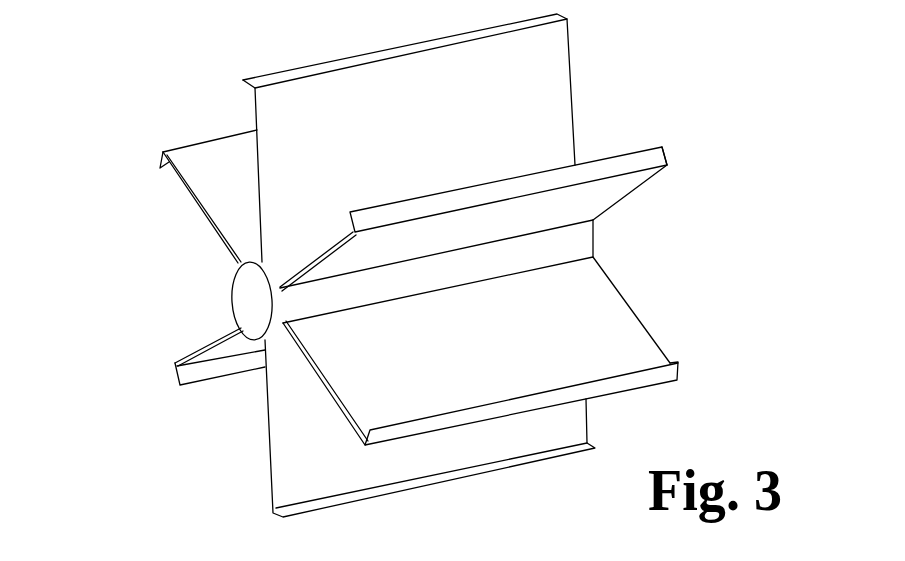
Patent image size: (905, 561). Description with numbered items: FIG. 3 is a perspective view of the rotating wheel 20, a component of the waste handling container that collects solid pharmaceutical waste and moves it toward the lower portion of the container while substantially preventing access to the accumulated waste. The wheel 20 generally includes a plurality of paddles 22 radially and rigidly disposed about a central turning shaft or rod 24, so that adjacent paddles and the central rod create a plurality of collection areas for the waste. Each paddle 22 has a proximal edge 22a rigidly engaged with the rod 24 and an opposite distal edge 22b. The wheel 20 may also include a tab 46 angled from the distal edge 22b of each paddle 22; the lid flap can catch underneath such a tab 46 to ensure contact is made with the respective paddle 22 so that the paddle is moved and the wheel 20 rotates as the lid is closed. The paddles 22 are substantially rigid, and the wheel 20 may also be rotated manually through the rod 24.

The rotating wheel 20 is at (146, 44).
The paddle 22 is at (628, 322).
The proximal edge 22a is at (278, 280).
The distal edge 22b is at (353, 232).
The central turning shaft or rod 24 is at (232, 292).
The tab 46 is at (667, 153).